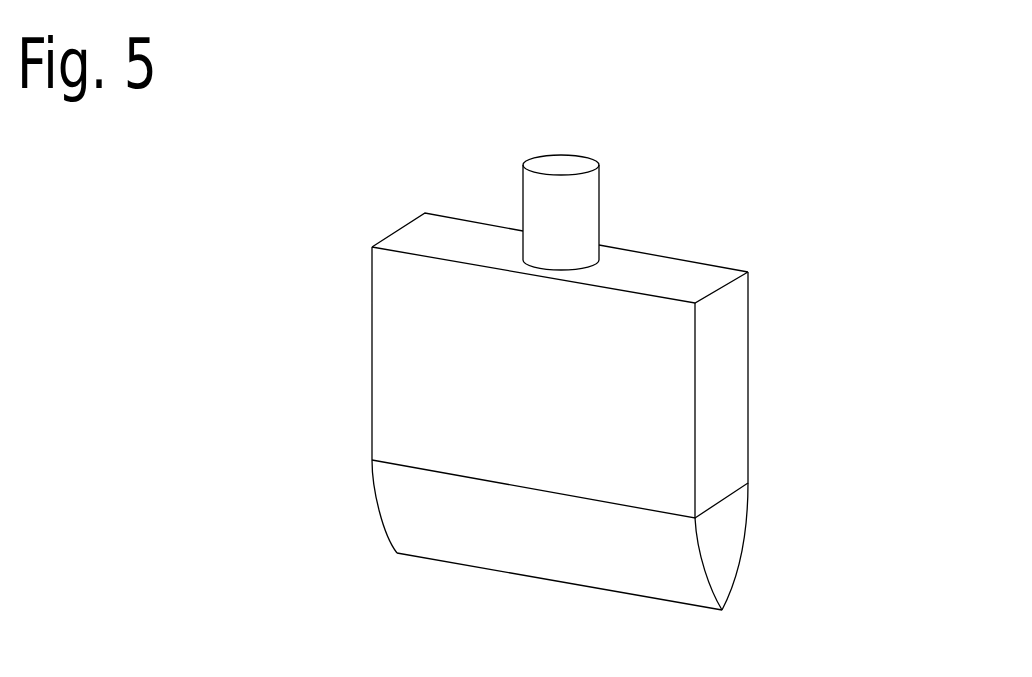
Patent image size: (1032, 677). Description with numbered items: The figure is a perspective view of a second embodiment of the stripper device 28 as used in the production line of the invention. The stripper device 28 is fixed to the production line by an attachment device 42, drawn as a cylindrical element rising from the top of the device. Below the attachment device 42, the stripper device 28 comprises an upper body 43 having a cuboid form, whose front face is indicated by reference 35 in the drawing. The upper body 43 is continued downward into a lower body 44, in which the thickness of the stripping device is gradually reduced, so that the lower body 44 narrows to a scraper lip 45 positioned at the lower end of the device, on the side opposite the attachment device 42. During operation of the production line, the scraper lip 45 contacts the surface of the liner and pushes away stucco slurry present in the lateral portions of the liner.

The stripper device 28 is at (935, 492).
The front face of housing 35 is at (405, 328).
The attachment device 42 is at (573, 212).
The upper body 43 is at (373, 415).
The lower body 44 is at (403, 517).
The scraper lip 45 is at (560, 585).